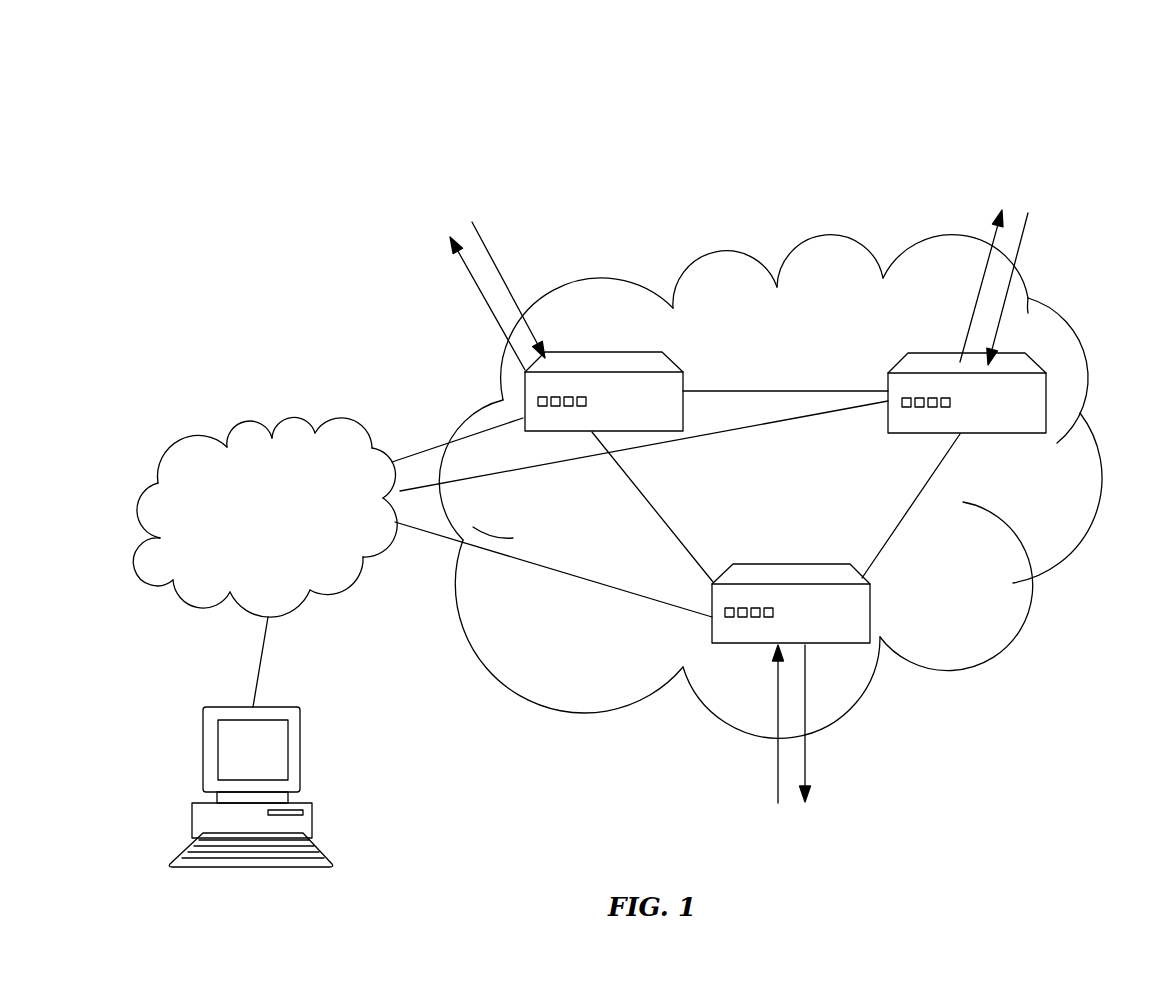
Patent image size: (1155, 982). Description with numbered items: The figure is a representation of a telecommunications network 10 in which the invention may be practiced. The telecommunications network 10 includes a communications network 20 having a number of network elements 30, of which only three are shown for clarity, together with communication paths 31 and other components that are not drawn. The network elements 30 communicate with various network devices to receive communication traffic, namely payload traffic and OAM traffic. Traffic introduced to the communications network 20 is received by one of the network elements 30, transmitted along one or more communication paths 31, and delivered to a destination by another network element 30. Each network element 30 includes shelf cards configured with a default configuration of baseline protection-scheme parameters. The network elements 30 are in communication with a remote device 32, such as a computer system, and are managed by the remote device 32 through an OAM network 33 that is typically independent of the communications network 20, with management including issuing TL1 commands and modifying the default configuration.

The telecommunications network 10 is at (740, 152).
The communications network 20 is at (756, 477).
The network element 30 is at (624, 424).
The communication path 31 is at (513, 487).
The remote device 32 is at (303, 760).
The OAM network 33 is at (251, 561).